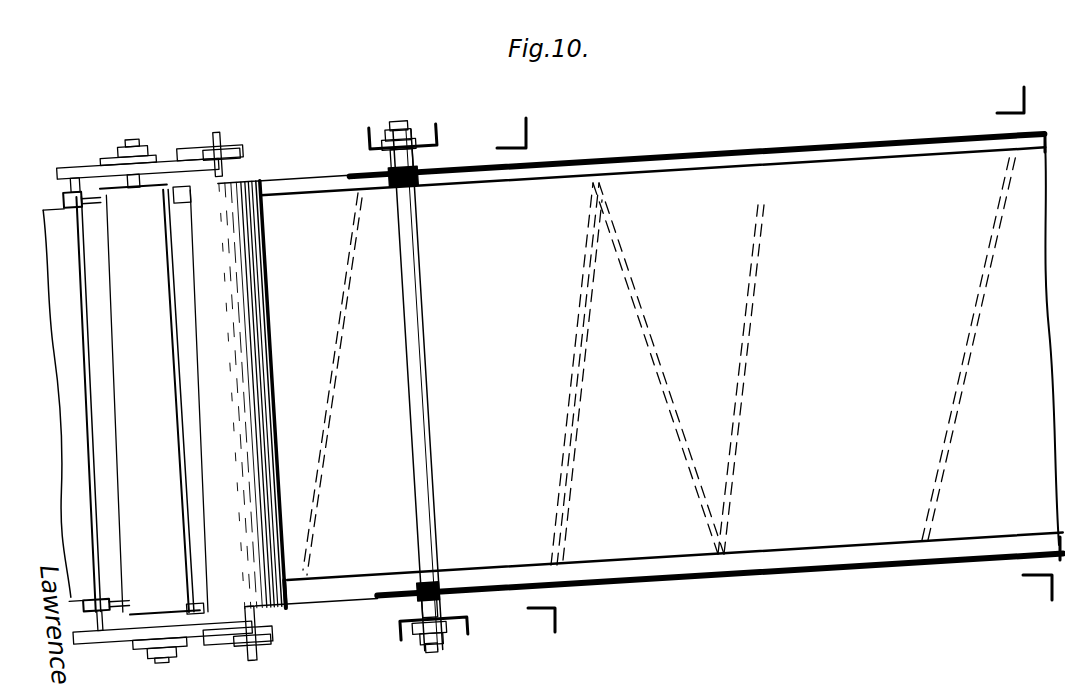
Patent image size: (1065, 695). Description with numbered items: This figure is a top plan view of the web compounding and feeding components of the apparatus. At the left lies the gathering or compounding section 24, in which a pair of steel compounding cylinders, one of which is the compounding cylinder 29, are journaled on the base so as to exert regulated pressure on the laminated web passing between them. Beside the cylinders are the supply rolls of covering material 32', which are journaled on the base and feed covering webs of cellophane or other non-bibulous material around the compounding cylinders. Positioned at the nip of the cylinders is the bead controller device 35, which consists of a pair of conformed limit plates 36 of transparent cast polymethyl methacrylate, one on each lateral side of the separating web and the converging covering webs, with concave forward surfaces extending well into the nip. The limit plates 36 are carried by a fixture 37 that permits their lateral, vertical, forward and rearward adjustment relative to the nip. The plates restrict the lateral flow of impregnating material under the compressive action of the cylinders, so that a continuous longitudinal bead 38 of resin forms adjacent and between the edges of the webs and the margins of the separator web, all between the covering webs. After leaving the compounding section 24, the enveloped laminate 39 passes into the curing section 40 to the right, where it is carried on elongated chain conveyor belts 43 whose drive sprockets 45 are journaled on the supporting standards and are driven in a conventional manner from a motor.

The compounding section 24 is at (162, 142).
The compounding cylinder 29 is at (125, 355).
The supply rolls of covering material 32' is at (298, 392).
The bead controller device 35 is at (97, 207).
The limit plates 36 is at (120, 597).
The fixture 37 is at (63, 198).
The bead 38 is at (329, 190).
The enveloped laminate 39 is at (816, 183).
The curing section 40 is at (723, 145).
The chain conveyor belt 43 is at (600, 161).
The drive sprocket 45 is at (354, 178).